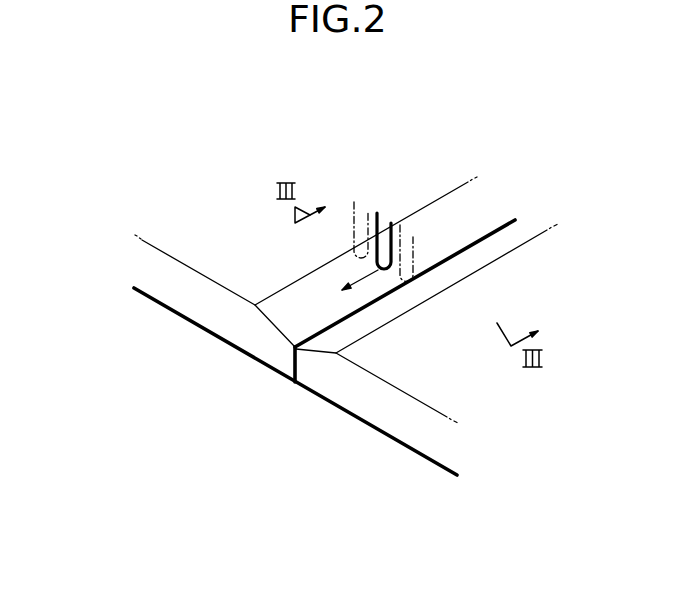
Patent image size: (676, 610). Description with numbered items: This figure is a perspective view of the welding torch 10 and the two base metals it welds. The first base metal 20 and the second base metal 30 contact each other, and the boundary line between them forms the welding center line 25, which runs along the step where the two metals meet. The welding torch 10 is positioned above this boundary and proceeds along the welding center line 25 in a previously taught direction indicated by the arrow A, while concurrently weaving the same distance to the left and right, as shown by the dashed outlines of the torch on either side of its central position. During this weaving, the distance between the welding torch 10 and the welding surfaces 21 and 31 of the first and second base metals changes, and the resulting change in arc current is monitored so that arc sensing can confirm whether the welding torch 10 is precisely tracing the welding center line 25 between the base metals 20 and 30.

The welding torch 10 is at (386, 252).
The first base metal 20 is at (192, 308).
The welding surface 21 is at (287, 303).
The welding center line 25 is at (313, 340).
The second base metal 30 is at (407, 428).
The welding surface 31 is at (353, 325).
The arrow A is at (357, 282).